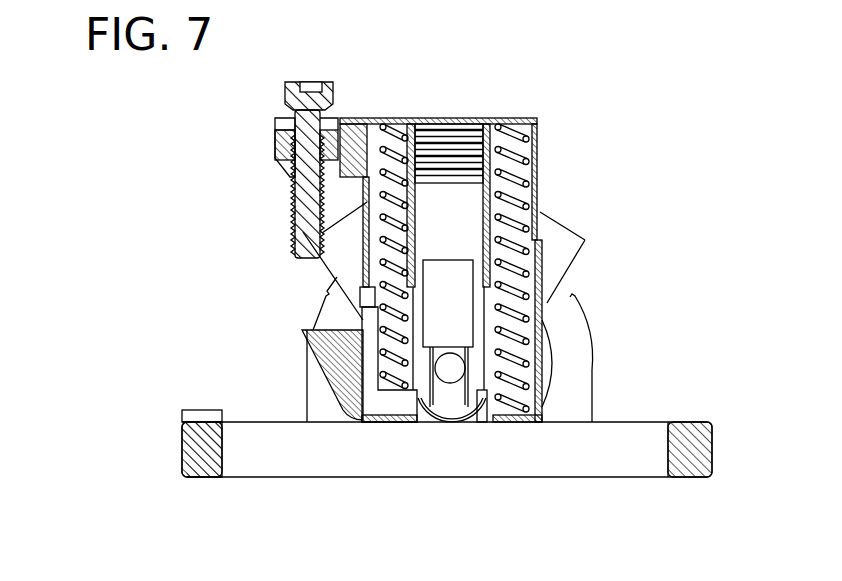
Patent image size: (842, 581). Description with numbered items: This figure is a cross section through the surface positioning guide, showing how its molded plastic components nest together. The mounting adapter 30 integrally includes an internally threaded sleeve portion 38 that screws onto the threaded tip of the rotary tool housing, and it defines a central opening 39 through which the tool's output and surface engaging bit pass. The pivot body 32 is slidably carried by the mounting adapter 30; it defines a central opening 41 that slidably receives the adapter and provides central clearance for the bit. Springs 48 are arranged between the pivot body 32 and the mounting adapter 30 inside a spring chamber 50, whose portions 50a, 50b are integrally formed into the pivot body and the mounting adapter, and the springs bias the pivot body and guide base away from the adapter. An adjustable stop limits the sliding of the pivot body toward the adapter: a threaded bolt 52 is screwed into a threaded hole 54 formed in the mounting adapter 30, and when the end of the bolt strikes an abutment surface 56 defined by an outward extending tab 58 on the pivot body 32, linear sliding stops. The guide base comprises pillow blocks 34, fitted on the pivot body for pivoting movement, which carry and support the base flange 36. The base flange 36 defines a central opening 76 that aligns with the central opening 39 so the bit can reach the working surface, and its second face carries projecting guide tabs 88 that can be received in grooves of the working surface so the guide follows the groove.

The mounting adapter 30 is at (546, 208).
The pivot body 32 is at (542, 273).
The pillow blocks 34 is at (578, 348).
The base flange 36 is at (200, 473).
The internally threaded sleeve portion 38 is at (508, 118).
The central opening 39 is at (456, 140).
The central opening 41 is at (452, 318).
The springs 48 is at (534, 170).
The spring chamber 50 is at (375, 110).
The spring chamber portion 50a is at (522, 148).
The spring chamber portion 50b is at (522, 375).
The threaded bolt 52 is at (328, 82).
The threaded hole 54 is at (275, 147).
The abutment surface 56 is at (310, 330).
The outward extending tab 58 is at (313, 360).
The central opening 76 is at (507, 467).
The guide tabs 88 is at (203, 412).